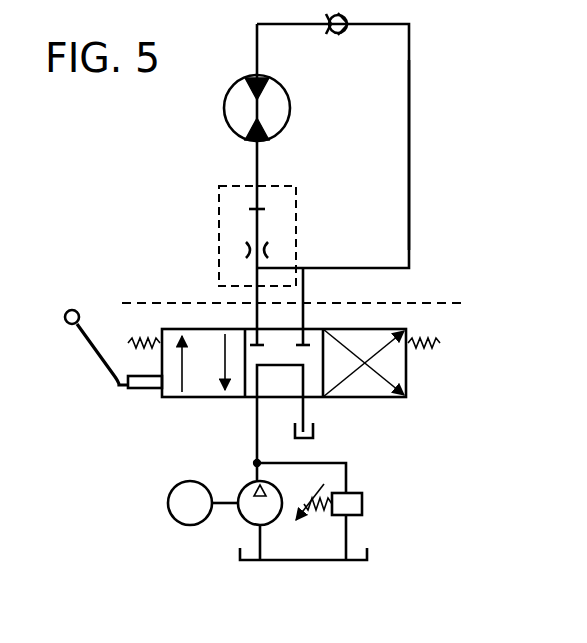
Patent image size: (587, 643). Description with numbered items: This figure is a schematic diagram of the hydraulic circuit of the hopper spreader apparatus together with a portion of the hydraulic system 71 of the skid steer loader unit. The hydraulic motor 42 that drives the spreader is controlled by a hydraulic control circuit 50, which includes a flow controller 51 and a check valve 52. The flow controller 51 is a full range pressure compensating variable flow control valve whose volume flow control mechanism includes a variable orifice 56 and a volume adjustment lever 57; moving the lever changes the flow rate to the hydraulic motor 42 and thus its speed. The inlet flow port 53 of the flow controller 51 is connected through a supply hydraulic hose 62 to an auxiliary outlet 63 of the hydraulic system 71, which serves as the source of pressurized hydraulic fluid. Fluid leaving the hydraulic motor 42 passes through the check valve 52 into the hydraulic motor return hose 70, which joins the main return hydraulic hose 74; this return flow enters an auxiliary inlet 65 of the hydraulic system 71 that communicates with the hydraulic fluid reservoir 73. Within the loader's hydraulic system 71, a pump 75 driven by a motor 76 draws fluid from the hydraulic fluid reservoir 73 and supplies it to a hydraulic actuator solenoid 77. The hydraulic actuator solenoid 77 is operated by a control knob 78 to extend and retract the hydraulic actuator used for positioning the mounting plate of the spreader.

The hydraulic motor 42 is at (224, 108).
The hydraulic control circuit 50 is at (491, 252).
The flow controller 51 is at (219, 210).
The check valve 52 is at (346, 17).
The inlet flow port 53 is at (256, 278).
The variable orifice 56 is at (267, 256).
The volume adjustment lever 57 is at (268, 243).
The supply hydraulic hose 62 is at (257, 295).
The auxiliary outlet 63 is at (220, 316).
The auxiliary inlet 65 is at (330, 314).
The hydraulic motor return hose 70 is at (409, 170).
The hydraulic system 71 is at (499, 393).
The hydraulic fluid reservoir 73 is at (313, 421).
The main return hydraulic hose 74 is at (305, 277).
The pump 75 is at (245, 518).
The motor 76 is at (172, 520).
The hydraulic actuator solenoid 77 is at (380, 397).
The control knob 78 is at (90, 357).